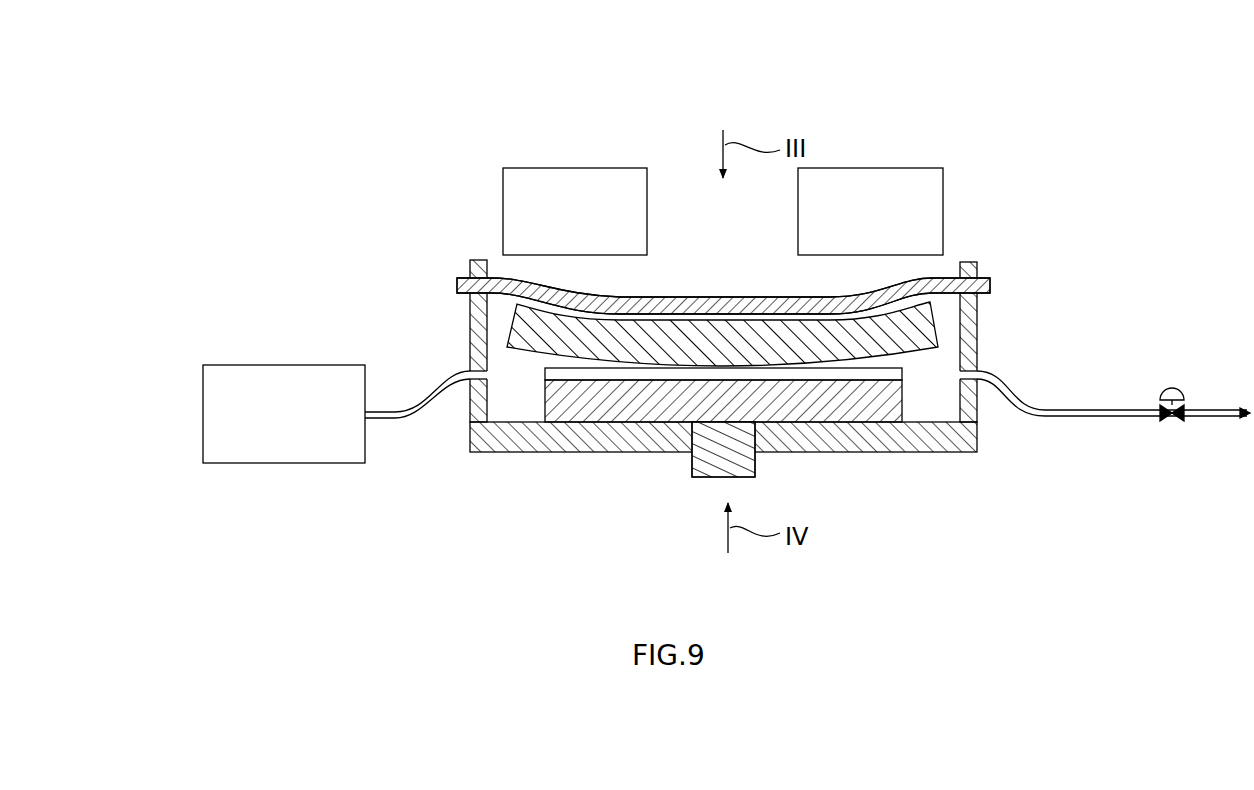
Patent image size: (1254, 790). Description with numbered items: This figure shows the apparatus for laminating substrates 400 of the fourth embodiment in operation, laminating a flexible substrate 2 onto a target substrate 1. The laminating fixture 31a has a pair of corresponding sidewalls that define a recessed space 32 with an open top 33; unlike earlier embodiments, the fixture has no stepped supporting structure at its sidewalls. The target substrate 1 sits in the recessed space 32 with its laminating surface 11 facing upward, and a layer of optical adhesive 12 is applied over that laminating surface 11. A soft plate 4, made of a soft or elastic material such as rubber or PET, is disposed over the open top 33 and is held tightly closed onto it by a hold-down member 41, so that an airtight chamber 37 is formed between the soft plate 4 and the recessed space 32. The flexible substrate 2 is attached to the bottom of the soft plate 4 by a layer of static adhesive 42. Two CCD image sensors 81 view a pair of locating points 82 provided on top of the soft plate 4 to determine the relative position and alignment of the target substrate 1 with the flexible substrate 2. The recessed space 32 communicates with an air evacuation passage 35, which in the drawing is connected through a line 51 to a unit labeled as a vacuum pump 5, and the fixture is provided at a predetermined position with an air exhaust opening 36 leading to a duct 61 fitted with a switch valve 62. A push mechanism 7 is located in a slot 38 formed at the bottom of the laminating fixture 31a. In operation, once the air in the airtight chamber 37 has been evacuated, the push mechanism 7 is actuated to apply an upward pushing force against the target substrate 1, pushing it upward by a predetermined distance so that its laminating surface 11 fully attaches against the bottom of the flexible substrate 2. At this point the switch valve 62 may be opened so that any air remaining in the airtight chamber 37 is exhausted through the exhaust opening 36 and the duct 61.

The target substrate 1 is at (723, 449).
The flexible substrate 2 is at (757, 320).
The soft plate 4 is at (1000, 283).
The vacuum pump 5 is at (205, 384).
The push mechanism 7 is at (700, 478).
The laminating surface 11 is at (578, 425).
The optical adhesive 12 is at (622, 377).
The laminating fixture 31a is at (965, 453).
The recessed space 32 is at (912, 418).
The open top 33 is at (690, 286).
The air evacuation passage 35 is at (468, 397).
The air exhaust opening 36 is at (975, 395).
The airtight chamber 37 is at (458, 296).
The slot 38 is at (758, 457).
The hold-down member 41 is at (968, 261).
The static adhesive 42 is at (718, 312).
The suction pipe 51 is at (388, 420).
The duct 61 is at (1088, 418).
The switch valve 62 is at (1172, 421).
The CCD image sensor 81 is at (635, 176).
The locating point 82 is at (578, 289).
The apparatus for laminating substrates 400 is at (1080, 134).